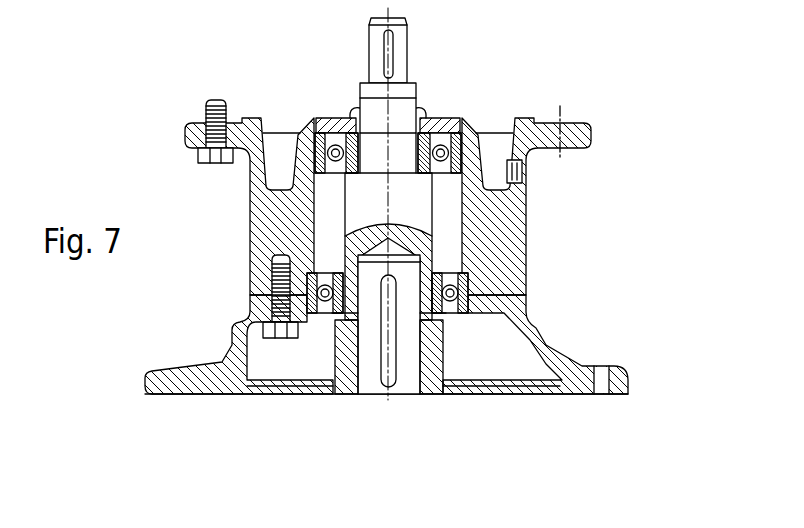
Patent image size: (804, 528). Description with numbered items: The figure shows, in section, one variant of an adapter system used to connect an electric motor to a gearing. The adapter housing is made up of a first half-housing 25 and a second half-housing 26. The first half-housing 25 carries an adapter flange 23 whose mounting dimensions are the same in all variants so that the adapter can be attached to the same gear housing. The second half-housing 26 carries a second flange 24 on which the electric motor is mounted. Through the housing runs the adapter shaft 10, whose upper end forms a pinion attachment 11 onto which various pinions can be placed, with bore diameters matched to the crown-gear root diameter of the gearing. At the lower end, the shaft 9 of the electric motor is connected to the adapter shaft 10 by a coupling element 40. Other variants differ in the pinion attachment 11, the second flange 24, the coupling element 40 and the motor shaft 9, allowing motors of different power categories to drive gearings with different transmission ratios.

The shaft 9 is at (369, 394).
The adapter shaft 10 is at (360, 84).
The pinion attachment 11 is at (407, 45).
The adapter flange 23 is at (571, 122).
The second flange 24 is at (587, 395).
The first half-housing 25 is at (518, 234).
The second half-housing 26 is at (538, 342).
The coupling element 40 is at (430, 394).